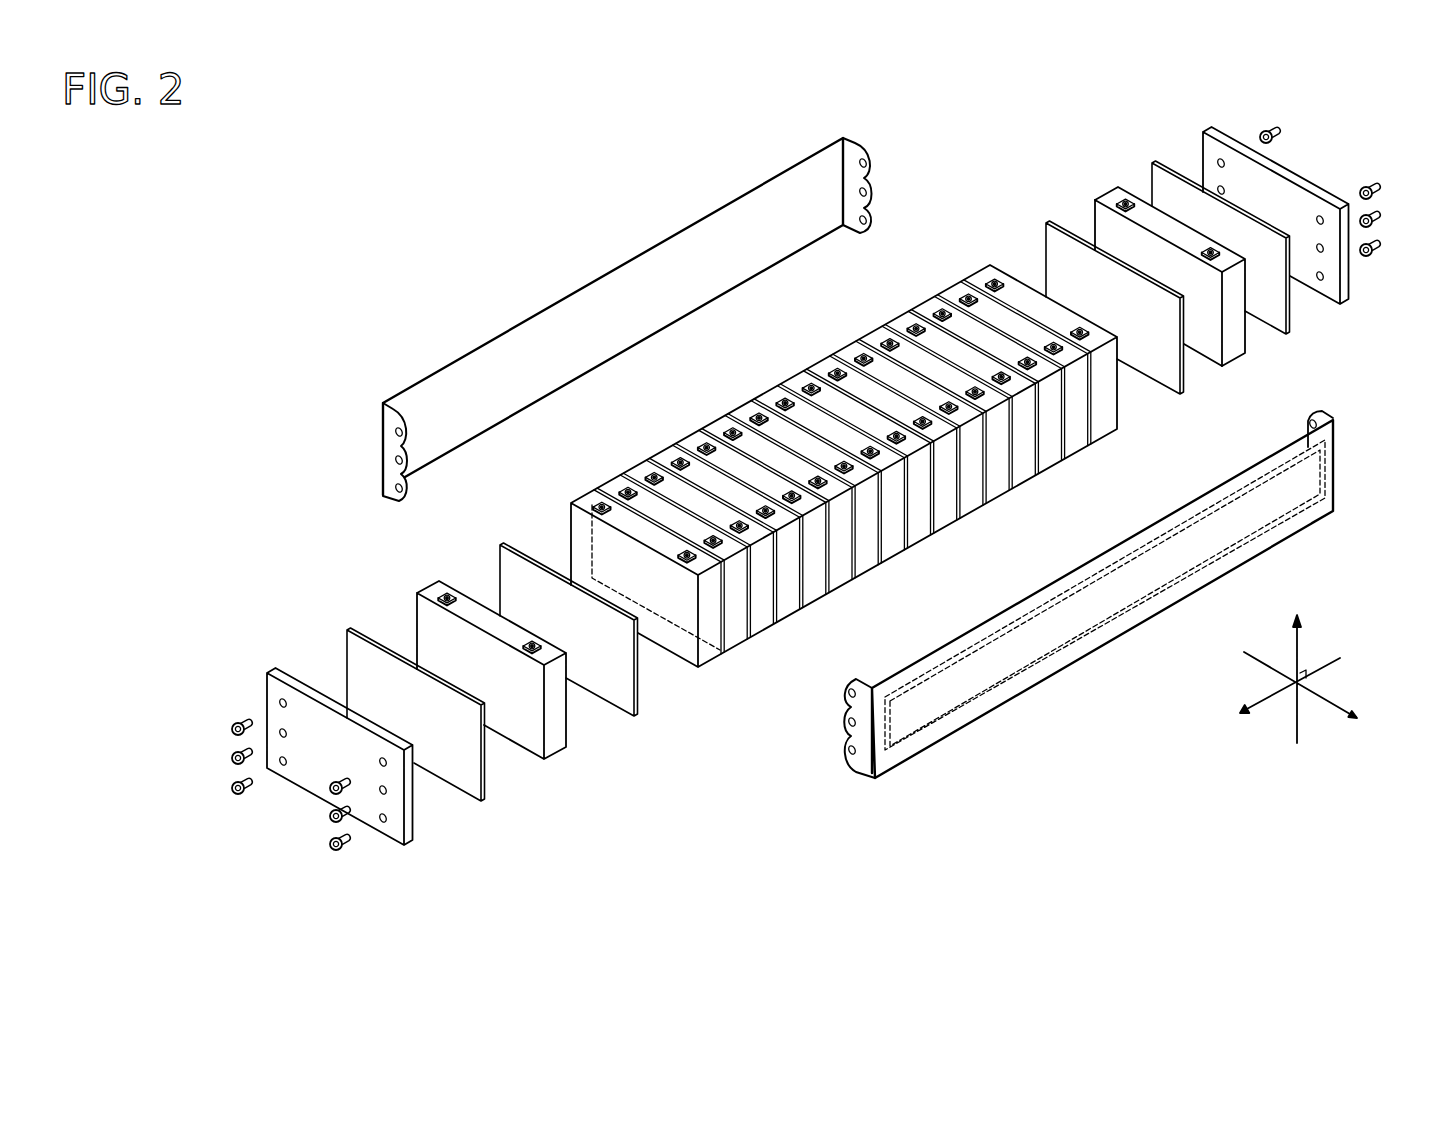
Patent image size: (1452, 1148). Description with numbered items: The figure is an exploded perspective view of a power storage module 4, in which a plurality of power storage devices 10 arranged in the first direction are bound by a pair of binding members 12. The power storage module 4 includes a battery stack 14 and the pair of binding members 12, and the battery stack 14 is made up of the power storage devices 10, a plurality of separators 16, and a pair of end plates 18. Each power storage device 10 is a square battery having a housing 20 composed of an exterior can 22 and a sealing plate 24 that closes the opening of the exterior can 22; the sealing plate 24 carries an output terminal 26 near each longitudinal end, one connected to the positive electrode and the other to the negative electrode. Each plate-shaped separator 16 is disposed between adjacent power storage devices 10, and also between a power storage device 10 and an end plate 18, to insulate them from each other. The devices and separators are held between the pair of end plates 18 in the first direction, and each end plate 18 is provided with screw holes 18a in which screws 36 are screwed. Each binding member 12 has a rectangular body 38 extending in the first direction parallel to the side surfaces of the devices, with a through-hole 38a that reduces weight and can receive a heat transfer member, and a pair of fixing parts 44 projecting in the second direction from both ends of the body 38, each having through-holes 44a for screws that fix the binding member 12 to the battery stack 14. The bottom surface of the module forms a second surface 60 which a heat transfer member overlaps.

The power storage module 4 is at (806, 931).
The power storage device 10 is at (1247, 378).
The binding member 12 is at (375, 452).
The battery stack 14 is at (974, 254).
The separator 16 is at (1291, 342).
The end plate 18 is at (410, 852).
The screw hole 18a is at (385, 828).
The housing 20 is at (1085, 138).
The exterior can 22 is at (1094, 206).
The sealing plate 24 is at (1112, 198).
The output terminal 26 is at (1127, 198).
The screw 36 is at (342, 857).
The body 38 is at (796, 206).
The through-hole 38a is at (975, 702).
The fixing part 44 is at (857, 143).
The through-hole 44a is at (875, 192).
The second surface 60 is at (678, 635).